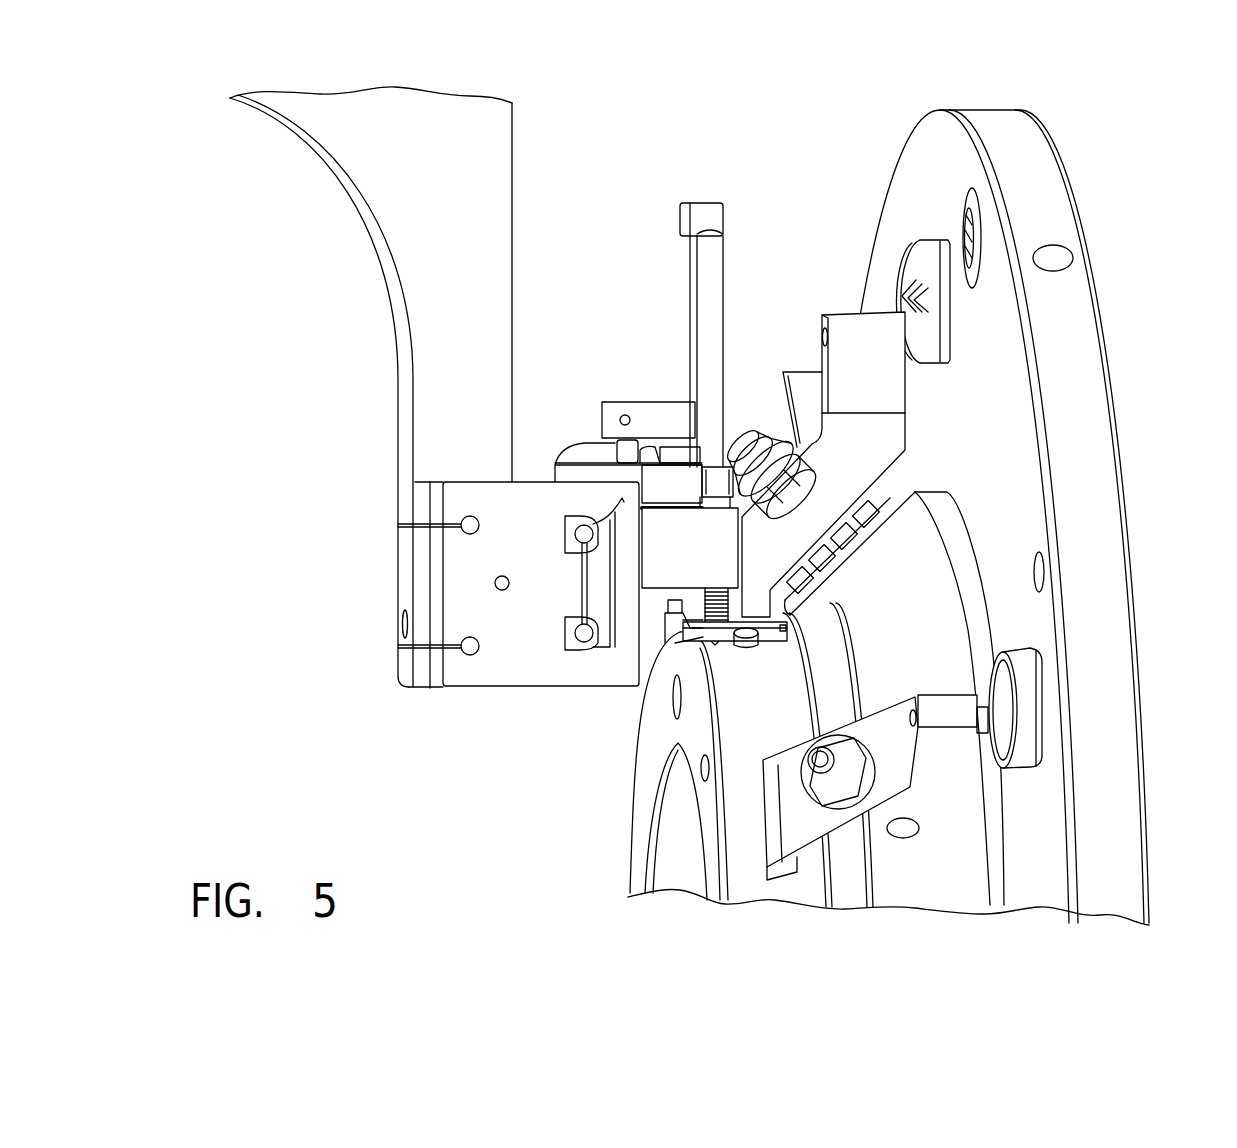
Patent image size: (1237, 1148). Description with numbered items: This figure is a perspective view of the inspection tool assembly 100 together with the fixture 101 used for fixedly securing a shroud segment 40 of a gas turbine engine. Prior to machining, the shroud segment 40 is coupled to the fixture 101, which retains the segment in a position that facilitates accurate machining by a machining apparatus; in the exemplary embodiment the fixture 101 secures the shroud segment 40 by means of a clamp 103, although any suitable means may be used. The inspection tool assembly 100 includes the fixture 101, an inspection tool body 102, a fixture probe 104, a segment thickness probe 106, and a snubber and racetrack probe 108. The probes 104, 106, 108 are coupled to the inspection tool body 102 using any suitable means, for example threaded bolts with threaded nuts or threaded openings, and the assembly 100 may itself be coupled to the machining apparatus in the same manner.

The inspection tool assembly 100 is at (642, 138).
The fixture 101 is at (1100, 293).
The inspection tool body 102 is at (563, 458).
The clamp 103 is at (852, 338).
The fixture probe 104 is at (717, 642).
The segment thickness probe 106 is at (715, 373).
The snubber and racetrack probe 108 is at (688, 397).
The shroud segment 40 is at (777, 641).